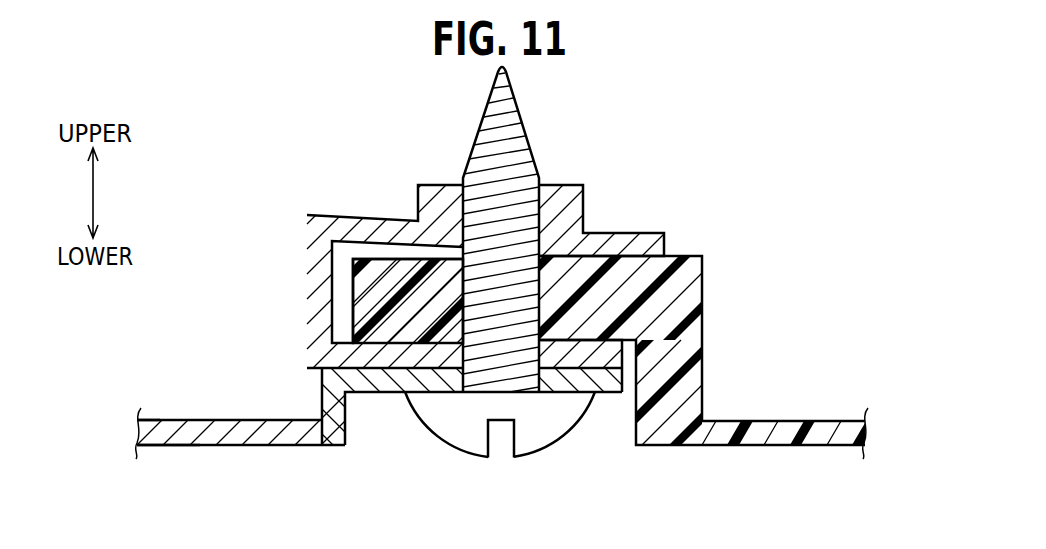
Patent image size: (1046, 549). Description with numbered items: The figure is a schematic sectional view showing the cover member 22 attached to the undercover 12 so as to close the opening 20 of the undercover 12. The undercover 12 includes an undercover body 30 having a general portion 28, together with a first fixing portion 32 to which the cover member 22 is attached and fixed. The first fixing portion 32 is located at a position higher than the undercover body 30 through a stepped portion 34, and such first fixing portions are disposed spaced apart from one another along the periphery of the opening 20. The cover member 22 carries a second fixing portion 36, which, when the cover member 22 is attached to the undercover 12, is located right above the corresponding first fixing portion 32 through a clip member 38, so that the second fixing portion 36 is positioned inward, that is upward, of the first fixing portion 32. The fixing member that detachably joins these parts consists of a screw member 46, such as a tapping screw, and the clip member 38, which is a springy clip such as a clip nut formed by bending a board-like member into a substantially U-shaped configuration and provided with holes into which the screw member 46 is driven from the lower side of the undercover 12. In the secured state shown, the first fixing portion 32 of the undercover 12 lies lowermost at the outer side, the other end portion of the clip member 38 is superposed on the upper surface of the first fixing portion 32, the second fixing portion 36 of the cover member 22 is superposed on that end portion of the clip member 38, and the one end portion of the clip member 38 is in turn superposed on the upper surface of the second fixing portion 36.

The undercover 12 is at (168, 455).
The opening 20 is at (636, 380).
The cover member 22 is at (763, 457).
The general portion 28 is at (243, 445).
The undercover body 30 is at (158, 435).
The first fixing portion 32 is at (430, 392).
The stepped portion 34 is at (320, 382).
The second fixing portion 36 is at (355, 303).
The clip member 38 is at (328, 197).
The screw member 46 is at (463, 457).